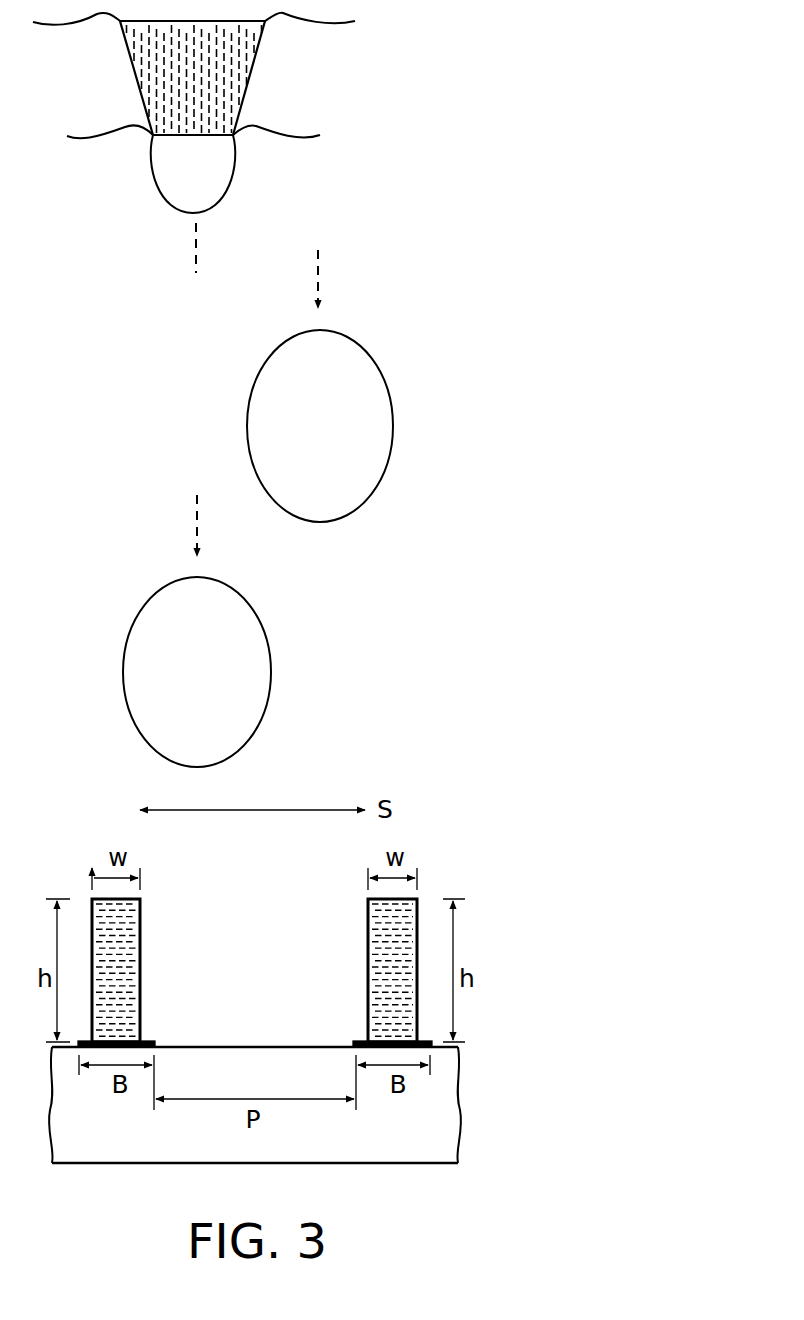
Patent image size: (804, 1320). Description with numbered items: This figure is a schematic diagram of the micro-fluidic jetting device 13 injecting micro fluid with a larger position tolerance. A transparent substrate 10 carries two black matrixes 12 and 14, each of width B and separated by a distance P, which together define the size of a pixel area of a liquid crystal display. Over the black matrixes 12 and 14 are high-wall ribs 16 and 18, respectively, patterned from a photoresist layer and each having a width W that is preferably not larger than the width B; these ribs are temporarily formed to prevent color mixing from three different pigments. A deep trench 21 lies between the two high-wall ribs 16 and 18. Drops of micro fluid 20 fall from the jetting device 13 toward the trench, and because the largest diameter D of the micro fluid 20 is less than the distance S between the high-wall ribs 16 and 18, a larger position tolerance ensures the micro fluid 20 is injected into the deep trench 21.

The transparent substrate 10 is at (416, 1154).
The black matrix 12 is at (145, 1040).
The micro-fluidic jetting device 13 is at (250, 78).
The black matrix 14 is at (362, 1040).
The high-wall rib 16 is at (410, 913).
The high-wall rib 18 is at (105, 914).
The micro fluid 20 is at (177, 187).
The deep trench 21 is at (260, 948).